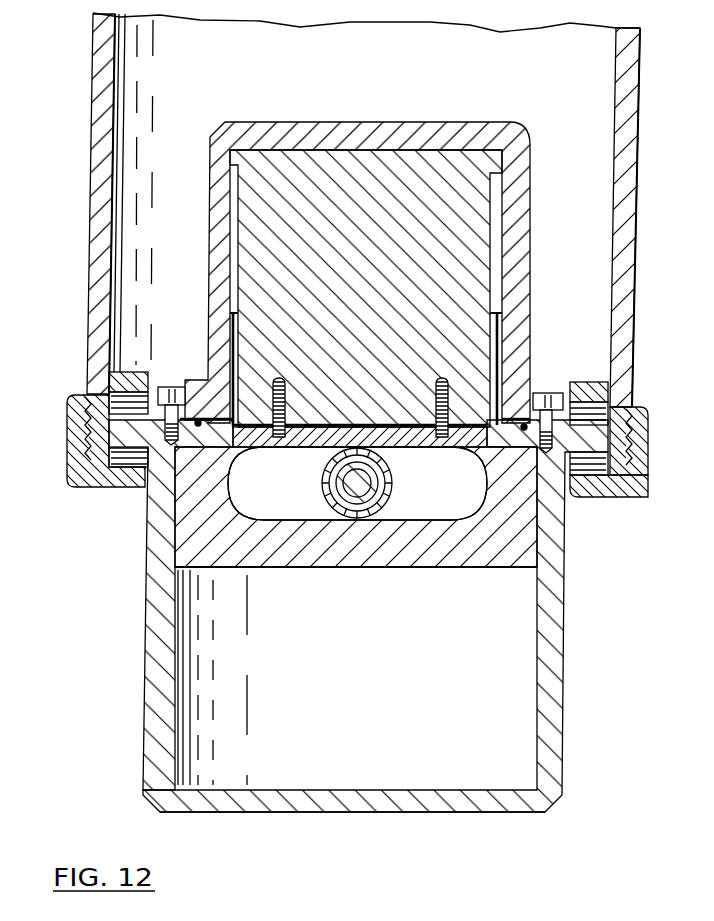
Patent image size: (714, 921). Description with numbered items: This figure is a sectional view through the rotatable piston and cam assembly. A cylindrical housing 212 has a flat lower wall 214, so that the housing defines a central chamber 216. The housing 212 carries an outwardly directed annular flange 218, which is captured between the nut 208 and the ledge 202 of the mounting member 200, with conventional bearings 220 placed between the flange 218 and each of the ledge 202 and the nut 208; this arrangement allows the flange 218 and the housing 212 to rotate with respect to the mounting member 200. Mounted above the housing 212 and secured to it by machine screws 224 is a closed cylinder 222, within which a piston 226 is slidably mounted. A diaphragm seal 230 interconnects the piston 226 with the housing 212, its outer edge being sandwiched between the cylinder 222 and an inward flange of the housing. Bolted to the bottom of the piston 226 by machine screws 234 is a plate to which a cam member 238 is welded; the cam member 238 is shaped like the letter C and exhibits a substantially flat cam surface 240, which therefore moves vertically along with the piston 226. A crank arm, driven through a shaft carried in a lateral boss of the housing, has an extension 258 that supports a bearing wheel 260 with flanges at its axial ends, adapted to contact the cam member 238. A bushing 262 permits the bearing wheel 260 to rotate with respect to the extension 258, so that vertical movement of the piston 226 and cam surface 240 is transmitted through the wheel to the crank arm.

The mounting member 200 is at (118, 72).
The ledge 202 is at (95, 385).
The nut 208 is at (103, 496).
The cylindrical housing 212 is at (565, 660).
The flat lower wall 214 is at (390, 813).
The central chamber 216 is at (325, 680).
The annular flange 218 is at (592, 385).
The bearings 220 is at (112, 395).
The closed cylinder 222 is at (212, 167).
The machine screws 224 is at (172, 387).
The piston 226 is at (407, 177).
The diaphragm seal 230 is at (495, 317).
The machine screws 234 is at (268, 375).
The cam member 238 is at (460, 557).
The cam surface 240 is at (293, 520).
The extension 258 is at (348, 482).
The bearing wheel 260 is at (387, 460).
The bushing 262 is at (388, 495).